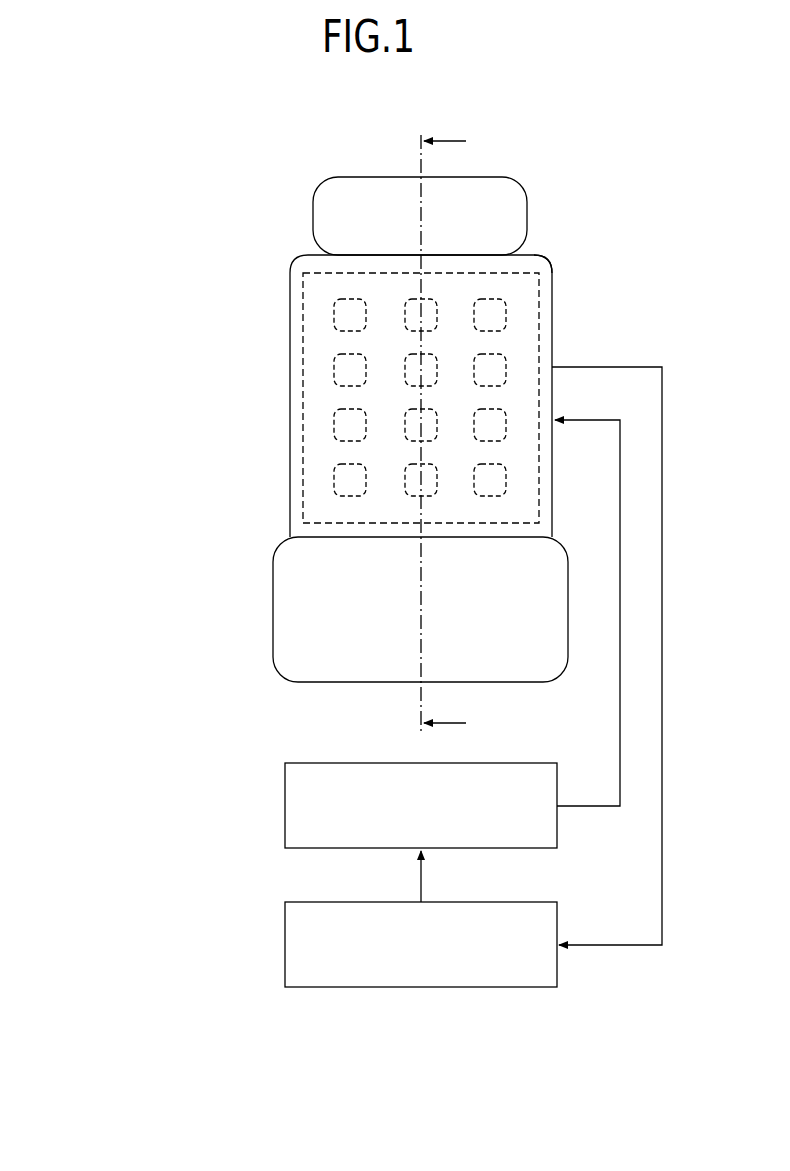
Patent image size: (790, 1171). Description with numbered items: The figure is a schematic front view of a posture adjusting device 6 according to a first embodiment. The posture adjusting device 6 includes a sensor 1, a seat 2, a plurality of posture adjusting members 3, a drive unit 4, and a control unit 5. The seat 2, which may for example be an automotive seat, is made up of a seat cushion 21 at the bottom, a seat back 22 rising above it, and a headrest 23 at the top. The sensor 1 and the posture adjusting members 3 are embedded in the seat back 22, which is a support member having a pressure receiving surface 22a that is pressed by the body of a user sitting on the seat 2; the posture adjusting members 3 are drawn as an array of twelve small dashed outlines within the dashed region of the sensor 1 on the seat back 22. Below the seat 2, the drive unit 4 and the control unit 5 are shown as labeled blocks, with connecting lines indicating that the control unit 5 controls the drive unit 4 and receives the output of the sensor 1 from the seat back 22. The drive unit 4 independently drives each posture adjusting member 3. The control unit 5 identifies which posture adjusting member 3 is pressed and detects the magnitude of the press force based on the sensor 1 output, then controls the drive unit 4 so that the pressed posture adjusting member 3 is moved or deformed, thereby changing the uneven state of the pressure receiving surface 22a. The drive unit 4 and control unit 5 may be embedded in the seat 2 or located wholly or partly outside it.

The sensor 1 is at (555, 287).
The seat 2 is at (175, 320).
The posture adjusting members 3 is at (505, 368).
The drive unit 4 is at (505, 763).
The control unit 5 is at (505, 902).
The posture adjusting device 6 is at (92, 192).
The seat cushion 21 is at (273, 580).
The seat back 22 is at (290, 400).
The pressure receiving surface 22a is at (534, 258).
The headrest 23 is at (313, 227).